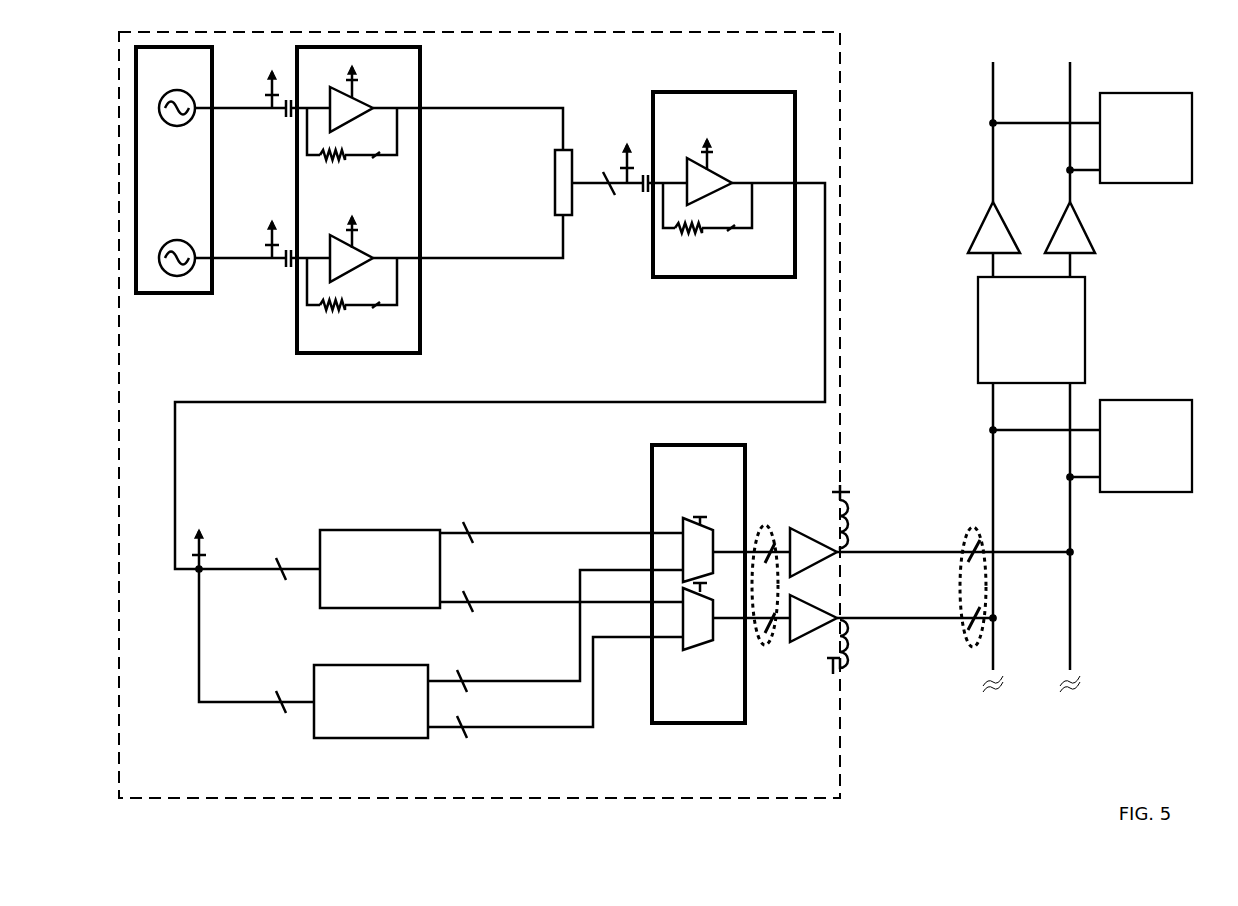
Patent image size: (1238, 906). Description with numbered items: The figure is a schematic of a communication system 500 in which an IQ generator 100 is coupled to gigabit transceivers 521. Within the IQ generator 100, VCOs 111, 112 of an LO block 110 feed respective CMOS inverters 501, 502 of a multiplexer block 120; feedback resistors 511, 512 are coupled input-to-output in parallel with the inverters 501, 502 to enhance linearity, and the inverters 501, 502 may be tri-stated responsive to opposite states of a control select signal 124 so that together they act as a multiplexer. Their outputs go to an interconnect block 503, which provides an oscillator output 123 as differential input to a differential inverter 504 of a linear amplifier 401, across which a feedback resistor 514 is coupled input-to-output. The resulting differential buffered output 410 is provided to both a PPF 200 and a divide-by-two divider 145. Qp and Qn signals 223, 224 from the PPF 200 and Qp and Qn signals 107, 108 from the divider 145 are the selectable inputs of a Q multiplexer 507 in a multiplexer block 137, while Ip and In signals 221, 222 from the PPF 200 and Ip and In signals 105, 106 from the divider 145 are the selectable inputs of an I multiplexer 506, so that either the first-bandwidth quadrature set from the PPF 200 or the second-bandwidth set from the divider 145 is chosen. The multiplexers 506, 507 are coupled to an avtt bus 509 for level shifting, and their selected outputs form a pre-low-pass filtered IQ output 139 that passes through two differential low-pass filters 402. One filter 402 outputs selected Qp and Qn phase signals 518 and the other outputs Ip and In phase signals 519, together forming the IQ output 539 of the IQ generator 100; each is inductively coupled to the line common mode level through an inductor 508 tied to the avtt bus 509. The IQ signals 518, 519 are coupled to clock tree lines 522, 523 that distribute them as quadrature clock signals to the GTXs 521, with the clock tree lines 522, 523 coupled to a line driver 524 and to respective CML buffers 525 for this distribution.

The communication system 500 is at (1094, 51).
The IQ generator 100 is at (842, 760).
The LO block 110 is at (194, 293).
The VCO 111 is at (195, 92).
The VCO 112 is at (177, 240).
The multiplexer block 120 is at (420, 47).
The control select signal 124 is at (356, 72).
The CMOS inverter 501 is at (366, 96).
The CMOS inverter 502 is at (363, 255).
The feedback resistor 511 is at (330, 158).
The feedback resistor 512 is at (324, 313).
The interconnect block 503 is at (547, 178).
The oscillator output 123 is at (583, 188).
The linear amplifier 401 is at (722, 92).
The differential inverter 504 is at (732, 173).
The feedback resistor 514 is at (707, 234).
The differential buffered output 410 is at (538, 399).
The PPF 200 is at (377, 530).
The divide-by-two divider 145 is at (331, 737).
The Qp signal 223 is at (561, 509).
The Qn signal 224 is at (478, 490).
The Ip signal 221 is at (555, 618).
The In signal 222 is at (502, 600).
The Qp signal 107 is at (561, 635).
The Qn signal 108 is at (481, 679).
The Ip signal 105 is at (555, 711).
The In signal 106 is at (470, 776).
The multiplexer block 137 is at (662, 445).
The Q multiplexer 507 is at (683, 515).
The I multiplexer 506 is at (685, 652).
The avtt bus 509 is at (701, 513).
The pre-low-pass filtered IQ output 139 is at (766, 649).
The differential low-pass filter 402 is at (790, 528).
The inductor 508 is at (858, 516).
The Qp and Qn phase signals 518 is at (893, 552).
The Ip and In phase signals 519 is at (890, 618).
The IQ output 539 is at (965, 650).
The clock tree line 523 is at (993, 475).
The clock tree line 522 is at (1070, 630).
The gigabit transceiver 521 is at (1091, 292).
The CML buffer 525 is at (975, 235).
The line driver 524 is at (978, 345).